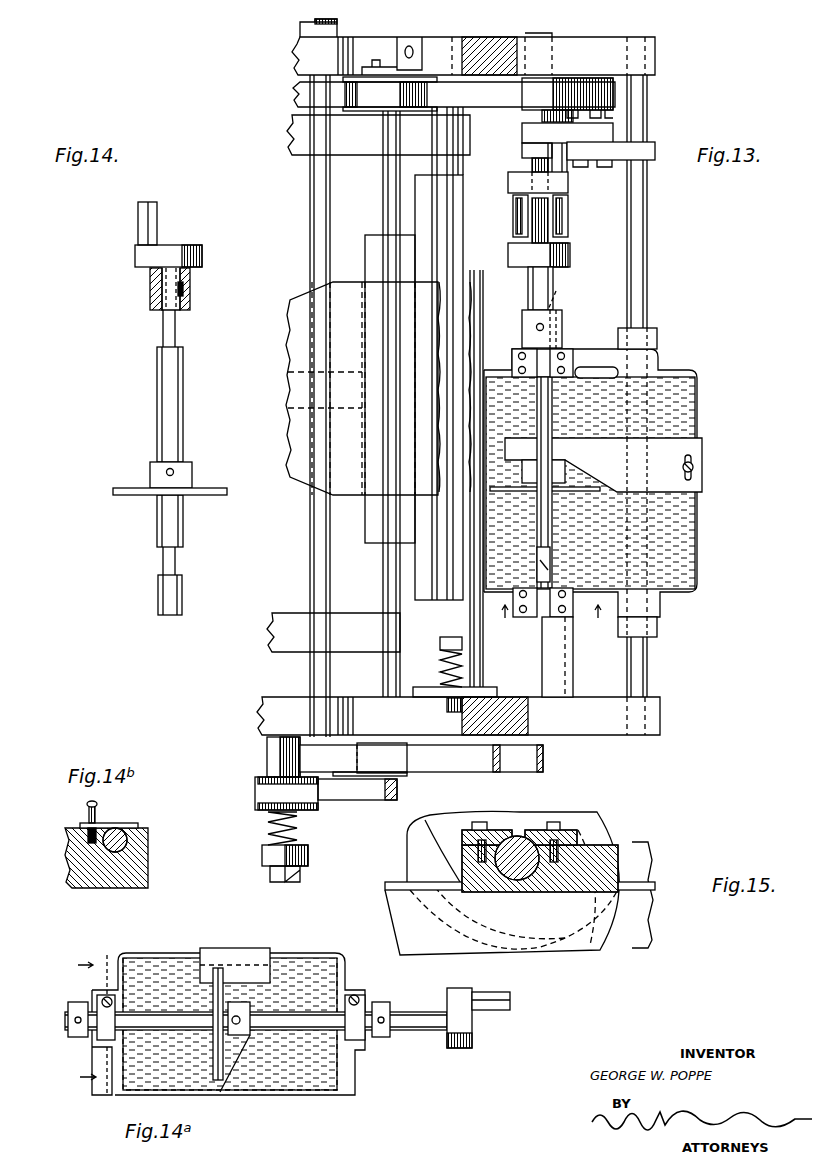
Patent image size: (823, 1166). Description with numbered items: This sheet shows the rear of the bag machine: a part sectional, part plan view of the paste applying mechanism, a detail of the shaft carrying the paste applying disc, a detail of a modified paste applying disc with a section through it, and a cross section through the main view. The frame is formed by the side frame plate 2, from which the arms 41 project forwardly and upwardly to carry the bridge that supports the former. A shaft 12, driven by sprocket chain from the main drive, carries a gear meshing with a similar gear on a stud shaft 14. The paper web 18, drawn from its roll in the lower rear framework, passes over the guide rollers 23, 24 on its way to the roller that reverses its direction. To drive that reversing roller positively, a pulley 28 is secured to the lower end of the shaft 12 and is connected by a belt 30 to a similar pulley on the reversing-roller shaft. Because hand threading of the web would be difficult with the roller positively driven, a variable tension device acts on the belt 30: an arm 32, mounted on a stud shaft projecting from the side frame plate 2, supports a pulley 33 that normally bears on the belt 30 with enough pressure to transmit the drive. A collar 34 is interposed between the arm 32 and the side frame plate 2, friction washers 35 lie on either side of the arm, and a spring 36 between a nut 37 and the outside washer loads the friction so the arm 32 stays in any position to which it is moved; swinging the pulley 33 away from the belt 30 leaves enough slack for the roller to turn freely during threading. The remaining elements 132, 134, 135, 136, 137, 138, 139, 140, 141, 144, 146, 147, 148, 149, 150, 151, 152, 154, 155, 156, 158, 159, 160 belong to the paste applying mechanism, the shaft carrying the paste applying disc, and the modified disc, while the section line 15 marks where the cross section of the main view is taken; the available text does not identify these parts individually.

In FIG. 13, the side frame plate 2 is at (290, 134).
In FIG. 13, the shaft 12 is at (312, 198).
In FIG. 13, the stud shaft 14 is at (337, 30).
In FIG. 13, the section line 15- 15 is at (553, 621).
In FIG. 13, the web 18 is at (445, 298).
In FIG. 13, the guide roller 23 is at (365, 250).
In FIG. 13, the guide roller 24 is at (463, 245).
In FIG. 13, the pulley 28 is at (345, 750).
In FIG. 13, the belt 30 is at (455, 772).
In FIG. 13, the arm 32 is at (255, 796).
In FIG. 13, the pulley 33 is at (408, 745).
In FIG. 13, the collar 34 is at (267, 752).
In FIG. 13, the friction washers 35 is at (255, 780).
In FIG. 13, the spring 36 is at (268, 836).
In FIG. 13, the nut 37 is at (262, 856).
In FIG. 13, the arms 41 is at (290, 53).
In FIG. 13, the gear 132 is at (290, 93).
In FIG. 13, the lead 134 is at (500, 75).
In FIG. 13, the pin 135 is at (530, 160).
In FIG. 13, the vane plate 136 is at (552, 522).
In FIG. 14, the vane plate 136 is at (222, 488).
In FIG. 14A, the vane plate 136 is at (215, 1076).
In FIG. 15, the vane plate 136 is at (407, 858).
In FIG. 13, the gear 137 is at (352, 112).
In FIG. 13, the reservoir 138 is at (697, 406).
In FIG. 14B, the reservoir 138 is at (140, 880).
In FIG. 14A, the reservoir 138 is at (295, 953).
In FIG. 15, the reservoir 138 is at (652, 920).
In FIG. 13, the bearing block 139 is at (653, 333).
In FIG. 13, the shaft 140 is at (645, 266).
In FIG. 13, the base plate 141 is at (600, 37).
In FIG. 13, the shaft 144 is at (530, 292).
In FIG. 14, the shaft 144 is at (183, 523).
In FIG. 14B, the shaft 144 is at (128, 842).
In FIG. 14A, the shaft 144 is at (296, 1012).
In FIG. 15, the shaft 144 is at (600, 835).
In FIG. 13, the ball joint 146 is at (574, 290).
In FIG. 14, the ball joint 146 is at (176, 330).
In FIG. 15, the ball joint 146 is at (530, 835).
In FIG. 13, the clamp 147 is at (545, 360).
In FIG. 15, the clamp 147 is at (490, 832).
In FIG. 13, the collar 148 is at (562, 318).
In FIG. 14, the collar 148 is at (190, 276).
In FIG. 13, the hole 149 is at (536, 327).
In FIG. 14, the hole 149 is at (190, 286).
In FIG. 13, the knob pin 150 is at (555, 230).
In FIG. 14, the knob pin 150 is at (157, 222).
In FIG. 14A, the knob pin 150 is at (482, 1000).
In FIG. 13, the fork arm 151 is at (513, 215).
In FIG. 13, the cross head 152 is at (508, 185).
In FIG. 13, the plate 154 is at (700, 444).
In FIG. 14A, the plate 154 is at (240, 948).
In FIG. 15, the plate 154 is at (385, 886).
In FIG. 13, the screw 155 is at (700, 468).
In FIG. 14B, the clamp 156 is at (118, 826).
In FIG. 14A, the clamp 156 is at (90, 1000).
In FIG. 13, the rod 158 is at (483, 658).
In FIG. 13, the nut 159 is at (440, 710).
In FIG. 13, the spring 160 is at (445, 660).